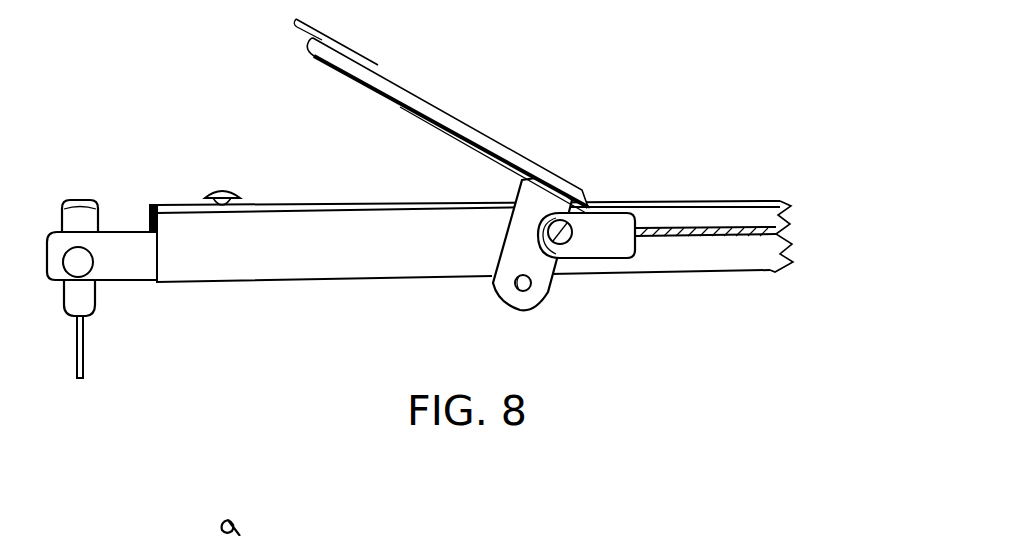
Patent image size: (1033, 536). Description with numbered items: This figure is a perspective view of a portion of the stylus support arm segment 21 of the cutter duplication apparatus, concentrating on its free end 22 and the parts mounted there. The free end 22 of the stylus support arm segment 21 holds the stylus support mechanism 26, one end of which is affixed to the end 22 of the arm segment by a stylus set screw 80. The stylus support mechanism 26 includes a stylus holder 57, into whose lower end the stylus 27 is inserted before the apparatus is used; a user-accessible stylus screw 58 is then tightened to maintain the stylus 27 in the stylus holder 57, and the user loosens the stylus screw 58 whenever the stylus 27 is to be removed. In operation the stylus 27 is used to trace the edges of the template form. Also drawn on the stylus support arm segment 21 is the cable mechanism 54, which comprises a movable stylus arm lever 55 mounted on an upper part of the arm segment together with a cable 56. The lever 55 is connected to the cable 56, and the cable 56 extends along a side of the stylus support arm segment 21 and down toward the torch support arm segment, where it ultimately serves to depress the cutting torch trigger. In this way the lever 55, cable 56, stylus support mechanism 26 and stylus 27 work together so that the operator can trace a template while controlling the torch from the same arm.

The stylus support arm segment 21 is at (707, 185).
The free end 22 is at (258, 262).
The stylus support mechanism 26 is at (103, 225).
The stylus 27 is at (88, 352).
The cable mechanism 54 is at (600, 170).
The stylus arm lever 55 is at (438, 107).
The cable 56 is at (699, 236).
The stylus holder 57 is at (98, 213).
The stylus screw 58 is at (80, 268).
The stylus set screw 80 is at (221, 186).